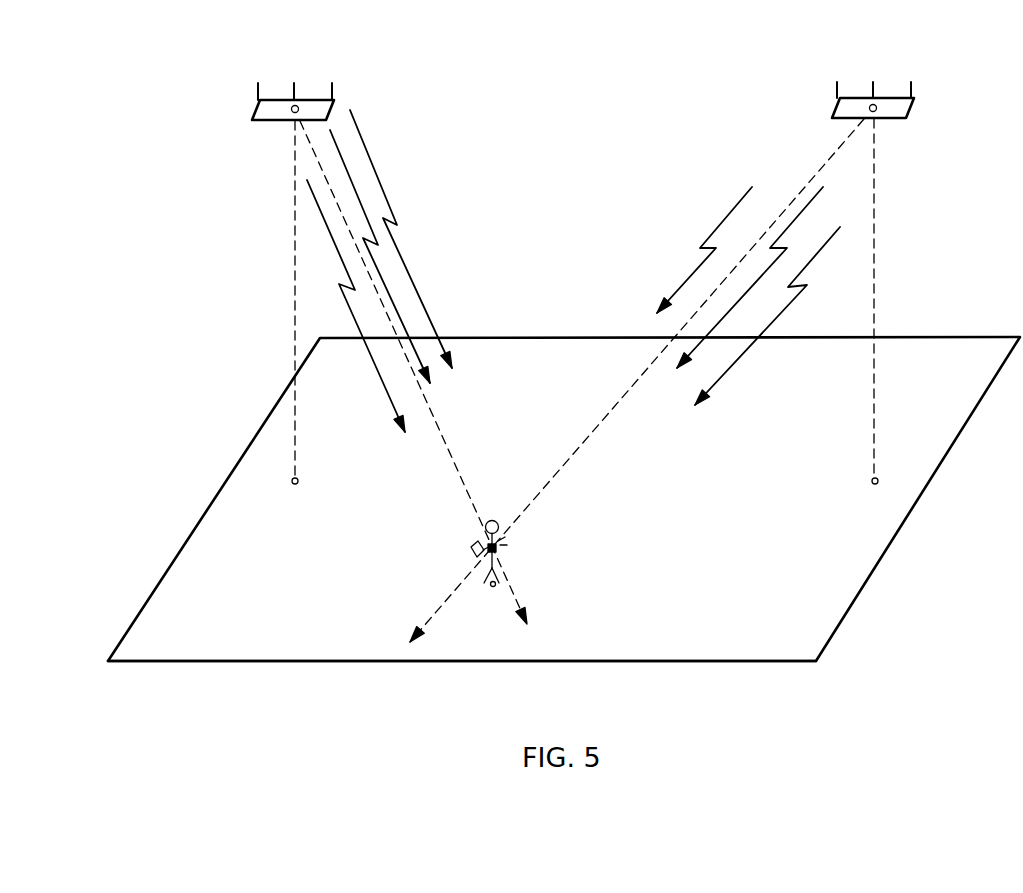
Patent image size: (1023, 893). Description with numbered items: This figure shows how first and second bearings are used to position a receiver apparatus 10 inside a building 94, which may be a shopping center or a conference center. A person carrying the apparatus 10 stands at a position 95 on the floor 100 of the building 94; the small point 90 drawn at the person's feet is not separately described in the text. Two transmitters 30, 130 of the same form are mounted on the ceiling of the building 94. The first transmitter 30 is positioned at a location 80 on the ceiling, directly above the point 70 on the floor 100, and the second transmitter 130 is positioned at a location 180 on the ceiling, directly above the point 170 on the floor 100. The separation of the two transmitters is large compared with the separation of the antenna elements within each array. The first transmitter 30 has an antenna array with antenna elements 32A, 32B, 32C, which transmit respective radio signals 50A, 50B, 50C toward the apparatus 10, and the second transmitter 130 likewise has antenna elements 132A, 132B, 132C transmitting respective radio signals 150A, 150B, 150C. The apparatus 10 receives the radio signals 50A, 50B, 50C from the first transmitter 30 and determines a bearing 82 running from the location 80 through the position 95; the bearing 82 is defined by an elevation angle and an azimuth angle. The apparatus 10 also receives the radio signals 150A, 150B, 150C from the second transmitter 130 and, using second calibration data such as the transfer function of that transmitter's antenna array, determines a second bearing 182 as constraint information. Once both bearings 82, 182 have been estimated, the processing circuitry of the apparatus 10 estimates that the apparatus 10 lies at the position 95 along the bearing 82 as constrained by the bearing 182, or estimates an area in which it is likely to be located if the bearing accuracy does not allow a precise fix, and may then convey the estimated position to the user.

The receiver apparatus 10 is at (474, 552).
The first transmitter 30 is at (817, 129).
The antenna element 32A is at (836, 97).
The antenna element 32B is at (872, 88).
The antenna element 32C is at (914, 96).
The radio signal 50A is at (700, 247).
The radio signal 50B is at (778, 248).
The radio signal 50C is at (800, 287).
The point on the floor 70 is at (872, 481).
The location of the first transmitter 80 is at (876, 104).
The bearing 82 is at (618, 396).
The user position 90 is at (493, 587).
The building 94 is at (926, 534).
The position 95 is at (498, 550).
The floor 100 is at (774, 662).
The second transmitter 130 is at (240, 127).
The antenna element 132A is at (258, 98).
The antenna element 132B is at (294, 92).
The antenna element 132C is at (336, 98).
The radio signal 150A is at (340, 283).
The radio signal 150B is at (365, 238).
The radio signal 150C is at (386, 219).
The point on the floor 170 is at (291, 481).
The location of the second transmitter 180 is at (297, 104).
The bearing 182 is at (438, 432).